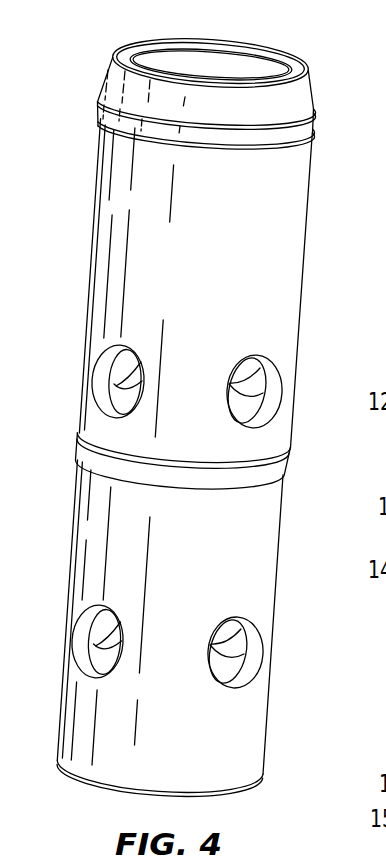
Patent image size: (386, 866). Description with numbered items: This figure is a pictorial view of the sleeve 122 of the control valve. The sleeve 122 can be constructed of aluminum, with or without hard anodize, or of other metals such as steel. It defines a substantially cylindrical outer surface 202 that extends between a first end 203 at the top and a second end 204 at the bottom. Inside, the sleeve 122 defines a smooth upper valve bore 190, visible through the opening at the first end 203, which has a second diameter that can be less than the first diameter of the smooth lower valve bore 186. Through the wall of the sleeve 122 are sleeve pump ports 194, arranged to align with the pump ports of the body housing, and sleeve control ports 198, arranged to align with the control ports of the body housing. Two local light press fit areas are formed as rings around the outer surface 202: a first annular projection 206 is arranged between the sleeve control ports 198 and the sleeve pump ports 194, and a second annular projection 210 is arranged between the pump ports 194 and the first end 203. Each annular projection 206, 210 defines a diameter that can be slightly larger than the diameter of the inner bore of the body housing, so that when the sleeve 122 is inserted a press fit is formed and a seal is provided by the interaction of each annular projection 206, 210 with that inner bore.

The sleeve 122 is at (347, 100).
The first end 203 is at (123, 56).
The upper valve bore 190 is at (182, 68).
The annular projection 210 is at (303, 127).
The outer surface 202 is at (275, 250).
The sleeve pump ports 194 is at (272, 365).
The annular projection 206 is at (248, 473).
The lower valve bore 186 is at (85, 620).
The sleeve control ports 198 is at (248, 670).
The second end 204 is at (102, 787).